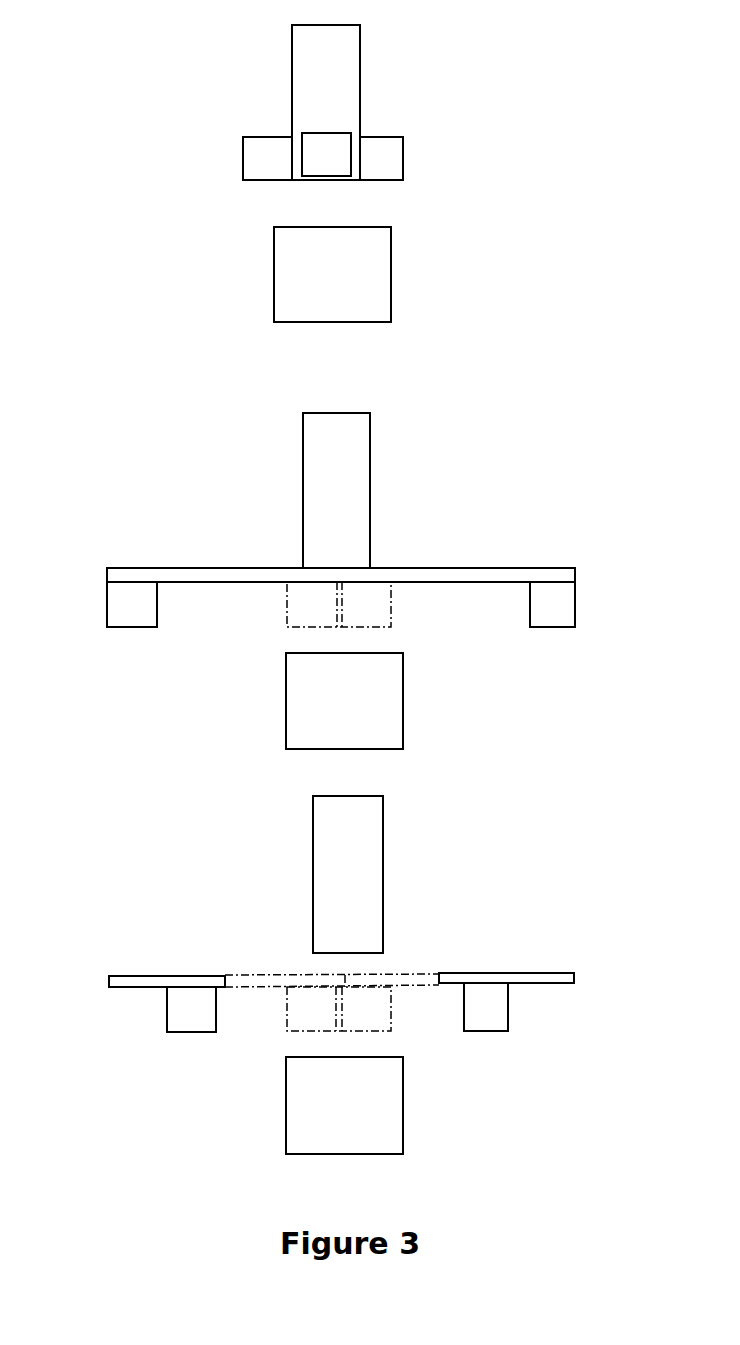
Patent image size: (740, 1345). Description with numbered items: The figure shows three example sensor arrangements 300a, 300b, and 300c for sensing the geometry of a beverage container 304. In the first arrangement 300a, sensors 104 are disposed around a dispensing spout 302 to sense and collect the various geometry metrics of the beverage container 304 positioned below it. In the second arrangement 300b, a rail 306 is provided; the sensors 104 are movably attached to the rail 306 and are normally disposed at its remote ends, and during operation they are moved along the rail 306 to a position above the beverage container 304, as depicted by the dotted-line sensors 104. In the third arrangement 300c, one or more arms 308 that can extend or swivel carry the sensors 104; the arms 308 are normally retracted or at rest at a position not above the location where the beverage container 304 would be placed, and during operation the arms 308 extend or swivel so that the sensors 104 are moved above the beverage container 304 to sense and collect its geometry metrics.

The sensors 104 is at (267, 135).
The first example sensor arrangement 300a is at (593, 199).
The second example sensor arrangement 300b is at (122, 453).
The third example sensor arrangement 300c is at (663, 875).
The dispensing spout 302 is at (309, 58).
The beverage container 304 is at (315, 258).
The rail 306 is at (464, 565).
The arms 308 is at (166, 973).